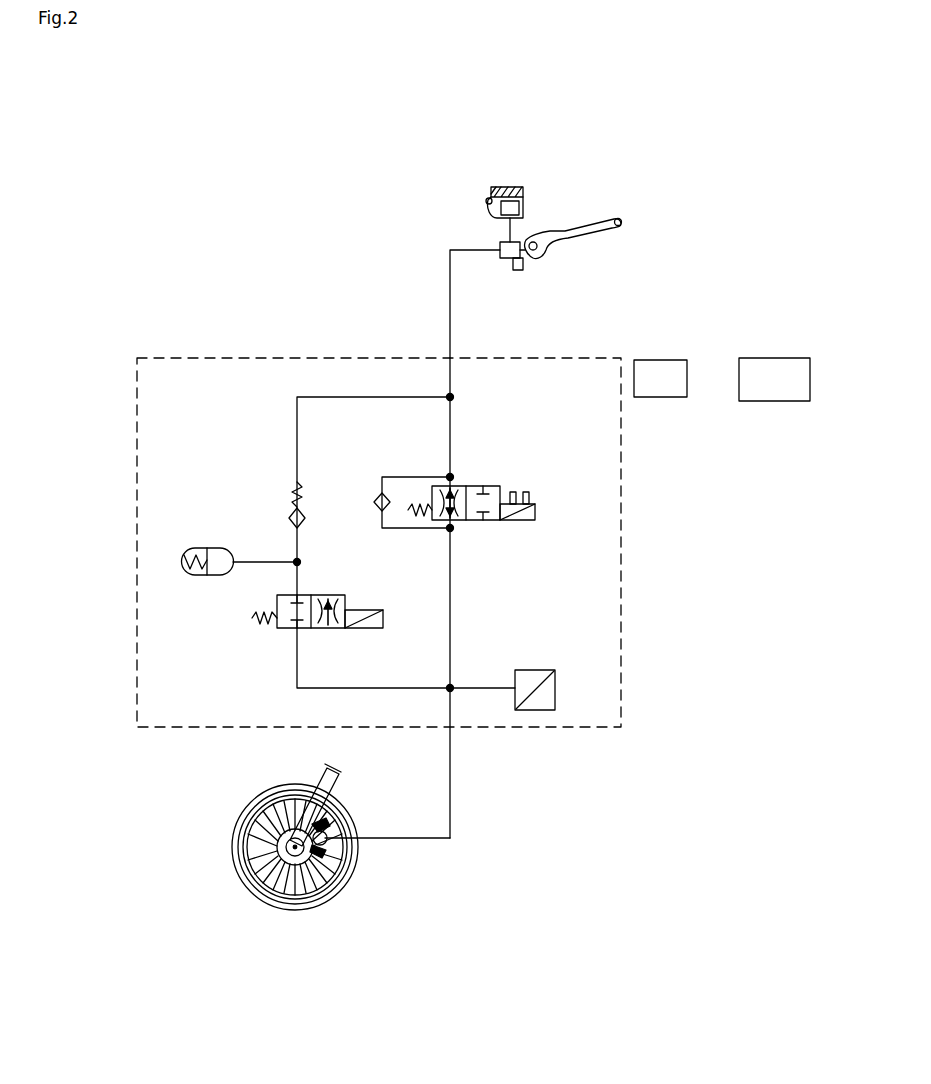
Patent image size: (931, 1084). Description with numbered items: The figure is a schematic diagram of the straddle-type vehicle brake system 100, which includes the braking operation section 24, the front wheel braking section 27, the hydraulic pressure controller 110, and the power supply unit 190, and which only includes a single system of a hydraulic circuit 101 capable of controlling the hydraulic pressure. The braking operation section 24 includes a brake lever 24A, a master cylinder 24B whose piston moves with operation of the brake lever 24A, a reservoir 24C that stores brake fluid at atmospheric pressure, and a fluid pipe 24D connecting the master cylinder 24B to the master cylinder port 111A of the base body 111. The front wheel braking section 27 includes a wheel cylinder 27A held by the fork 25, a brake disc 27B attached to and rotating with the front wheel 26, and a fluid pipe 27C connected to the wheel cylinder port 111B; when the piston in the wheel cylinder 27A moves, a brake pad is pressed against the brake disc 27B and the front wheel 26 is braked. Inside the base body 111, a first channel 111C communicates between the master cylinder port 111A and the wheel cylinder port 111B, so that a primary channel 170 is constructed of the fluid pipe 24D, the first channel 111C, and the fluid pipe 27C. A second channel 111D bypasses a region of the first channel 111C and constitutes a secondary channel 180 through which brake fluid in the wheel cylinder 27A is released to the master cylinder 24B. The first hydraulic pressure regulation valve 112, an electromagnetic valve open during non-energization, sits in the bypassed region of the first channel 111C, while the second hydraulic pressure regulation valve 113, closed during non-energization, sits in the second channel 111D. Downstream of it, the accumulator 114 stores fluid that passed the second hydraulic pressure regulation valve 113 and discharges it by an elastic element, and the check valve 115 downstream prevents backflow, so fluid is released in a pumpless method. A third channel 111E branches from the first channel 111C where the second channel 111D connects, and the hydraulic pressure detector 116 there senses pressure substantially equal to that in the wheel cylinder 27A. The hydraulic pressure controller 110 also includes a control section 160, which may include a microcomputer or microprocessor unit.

The straddle-type vehicle brake system 100 is at (740, 91).
The hydraulic circuit 101 is at (318, 234).
The braking operation section 24 is at (560, 190).
The brake lever 24A is at (608, 218).
The master cylinder 24B is at (509, 260).
The reservoir 24C is at (501, 185).
The fluid pipe 24D is at (472, 247).
The fork 25 is at (303, 785).
The front wheel 26 is at (250, 882).
The front wheel braking section 27 is at (372, 870).
The wheel cylinder 27A is at (355, 812).
The brake disc 27B is at (305, 862).
The fluid pipe 27C is at (450, 812).
The hydraulic pressure controller 110 is at (192, 345).
The base body 111 is at (603, 356).
The master cylinder port 111A is at (450, 358).
The wheel cylinder port 111B is at (452, 730).
The first channel 111C is at (465, 420).
The second channel 111D is at (345, 398).
The third channel 111E is at (485, 684).
The first hydraulic pressure regulation valve 112 is at (497, 522).
The second hydraulic pressure regulation valve 113 is at (334, 596).
The accumulator 114 is at (212, 545).
The check valve 115 is at (288, 505).
The hydraulic pressure detector 116 is at (540, 675).
The control section 160 is at (672, 398).
The primary channel 170 is at (423, 254).
The secondary channel 180 is at (330, 375).
The power supply unit 190 is at (795, 357).